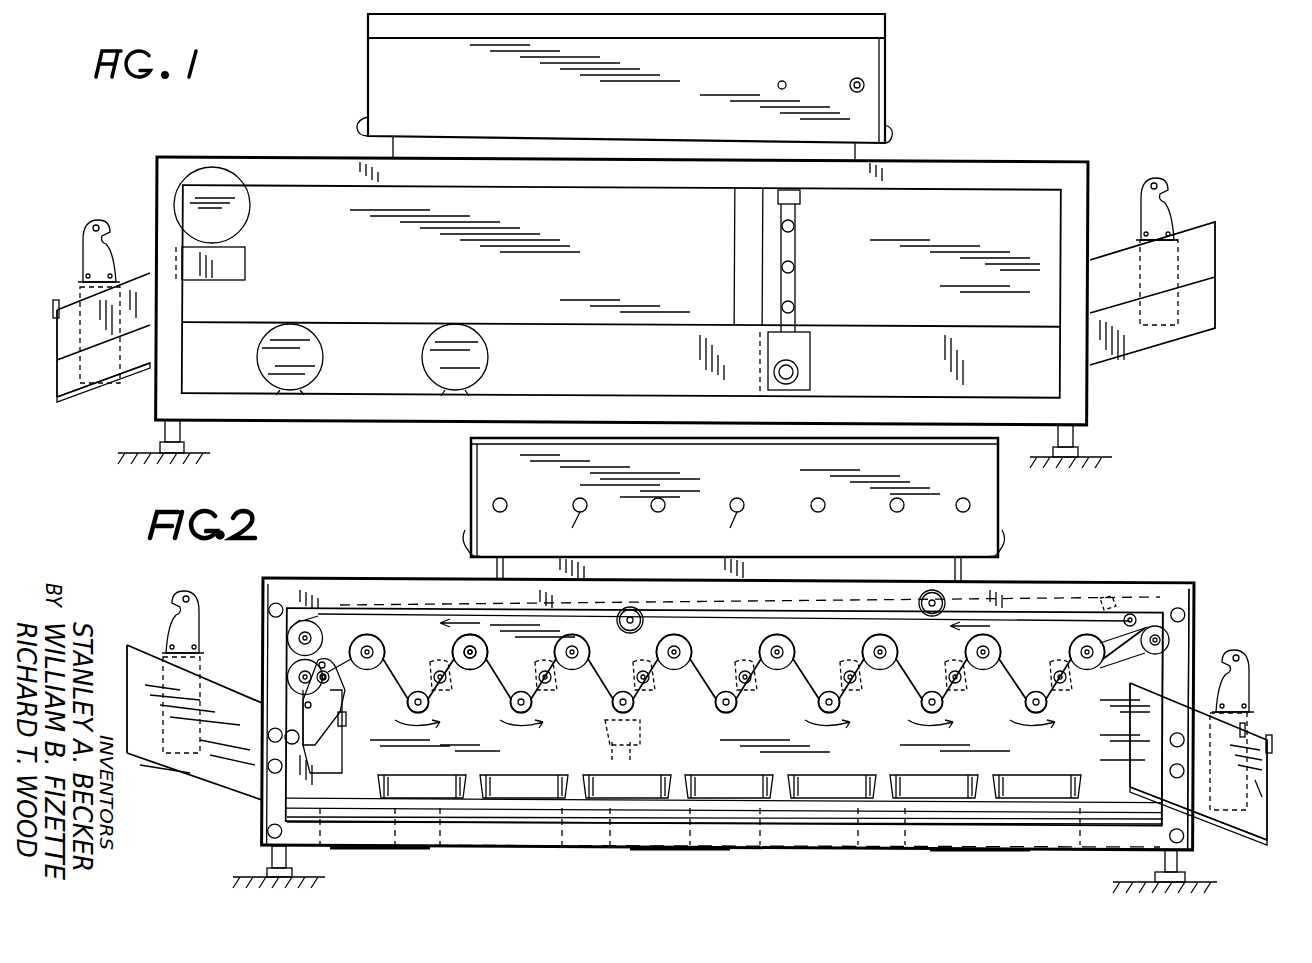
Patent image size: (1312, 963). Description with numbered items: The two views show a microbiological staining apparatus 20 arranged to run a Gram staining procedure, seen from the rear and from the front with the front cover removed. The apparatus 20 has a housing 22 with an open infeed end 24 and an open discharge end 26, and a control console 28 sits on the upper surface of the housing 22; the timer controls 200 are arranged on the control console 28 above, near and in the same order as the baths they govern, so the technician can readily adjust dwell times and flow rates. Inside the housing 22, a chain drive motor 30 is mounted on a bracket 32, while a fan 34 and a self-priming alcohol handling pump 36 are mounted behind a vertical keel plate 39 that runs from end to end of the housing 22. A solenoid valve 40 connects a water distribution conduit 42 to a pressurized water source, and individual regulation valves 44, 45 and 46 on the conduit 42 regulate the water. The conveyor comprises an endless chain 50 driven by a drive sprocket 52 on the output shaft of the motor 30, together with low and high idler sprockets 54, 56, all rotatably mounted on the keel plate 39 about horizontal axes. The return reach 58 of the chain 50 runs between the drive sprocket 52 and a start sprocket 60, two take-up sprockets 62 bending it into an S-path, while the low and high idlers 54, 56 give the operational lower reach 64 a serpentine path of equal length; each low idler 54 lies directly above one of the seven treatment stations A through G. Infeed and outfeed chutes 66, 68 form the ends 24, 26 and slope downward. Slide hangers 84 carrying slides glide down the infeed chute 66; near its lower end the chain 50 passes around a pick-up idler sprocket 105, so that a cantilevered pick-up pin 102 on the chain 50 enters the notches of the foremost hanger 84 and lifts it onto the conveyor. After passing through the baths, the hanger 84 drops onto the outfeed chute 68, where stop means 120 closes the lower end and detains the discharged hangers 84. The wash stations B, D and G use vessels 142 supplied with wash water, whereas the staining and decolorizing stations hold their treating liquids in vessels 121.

In FIG. 1, the staining apparatus 20 is at (1103, 106).
In FIG. 2, the staining apparatus 20 is at (410, 538).
In FIG. 1, the housing 22 is at (990, 158).
In FIG. 2, the housing 22 is at (724, 734).
In FIG. 1, the open infeed end 24 is at (1110, 210).
In FIG. 2, the open infeed end 24 is at (247, 621).
In FIG. 2, the open discharge end 26 is at (1210, 677).
In FIG. 1, the control console 28 is at (915, 78).
In FIG. 2, the control console 28 is at (456, 488).
In FIG. 1, the chain drive motor 30 is at (250, 212).
In FIG. 1, the bracket 32 is at (240, 267).
In FIG. 1, the fan 34 is at (318, 360).
In FIG. 1, the self-priming alcohol handling pump 36 is at (488, 335).
In FIG. 2, the vertical keel plate 39 is at (1105, 790).
In FIG. 1, the solenoid valve 40 is at (798, 369).
In FIG. 1, the water distribution conduit 42 is at (798, 213).
In FIG. 1, the regulation valve 44 is at (794, 228).
In FIG. 1, the regulation valve 45 is at (794, 267).
In FIG. 1, the regulation valve 46 is at (794, 307).
In FIG. 2, the endless chain 50 is at (360, 614).
In FIG. 2, the drive sprocket 52 is at (1145, 652).
In FIG. 2, the low idler sprockets 54 is at (512, 710).
In FIG. 2, the high idler sprockets 56 is at (562, 650).
In FIG. 2, the return reach 58 is at (1018, 612).
In FIG. 2, the start sprocket 60 is at (318, 636).
In FIG. 2, the take-up sprockets 62 is at (618, 625).
In FIG. 2, the operational lower reach 64 is at (398, 692).
In FIG. 1, the infeed chute 66 is at (1155, 370).
In FIG. 2, the infeed chute 66 is at (189, 797).
In FIG. 1, the outfeed chute 68 is at (110, 410).
In FIG. 2, the outfeed chute 68 is at (1229, 838).
In FIG. 1, the slide hangers 84 is at (85, 225).
In FIG. 2, the slide hangers 84 is at (120, 595).
In FIG. 2, the pick-up pins 102 is at (340, 678).
In FIG. 2, the pick-up idler sprocket 105 is at (298, 668).
In FIG. 1, the stop means 120 is at (58, 312).
In FIG. 2, the stop means 120 is at (1270, 745).
In FIG. 2, the trays 121 is at (408, 775).
In FIG. 2, the vessel 142 is at (522, 775).
In FIG. 2, the timer controls 200 is at (507, 511).